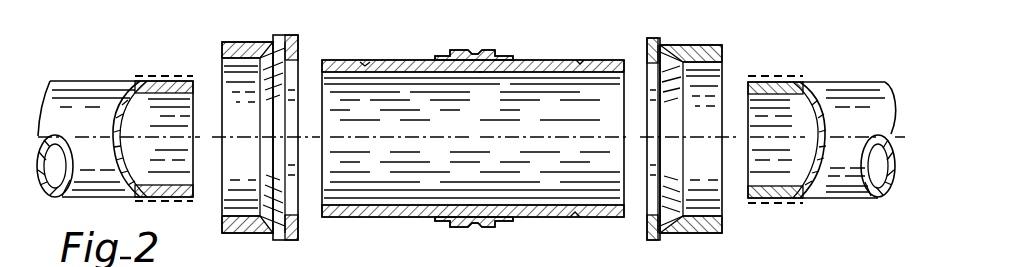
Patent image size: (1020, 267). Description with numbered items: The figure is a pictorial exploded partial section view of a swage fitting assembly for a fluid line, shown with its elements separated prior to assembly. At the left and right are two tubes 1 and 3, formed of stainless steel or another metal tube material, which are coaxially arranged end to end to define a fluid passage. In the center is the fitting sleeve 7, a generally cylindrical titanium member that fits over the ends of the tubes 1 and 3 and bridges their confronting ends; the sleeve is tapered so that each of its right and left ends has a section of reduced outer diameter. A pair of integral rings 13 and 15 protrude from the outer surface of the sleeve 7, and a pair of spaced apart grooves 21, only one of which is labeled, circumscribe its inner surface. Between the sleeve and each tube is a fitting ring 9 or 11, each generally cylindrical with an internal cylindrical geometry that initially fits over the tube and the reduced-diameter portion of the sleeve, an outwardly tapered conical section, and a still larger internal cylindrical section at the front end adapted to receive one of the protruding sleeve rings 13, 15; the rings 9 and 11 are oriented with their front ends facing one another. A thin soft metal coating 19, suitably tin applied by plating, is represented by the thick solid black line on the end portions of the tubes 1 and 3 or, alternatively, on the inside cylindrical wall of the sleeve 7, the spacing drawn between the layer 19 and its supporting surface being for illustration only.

The tube 1 is at (86, 80).
The tube 3 is at (840, 82).
The fitting sleeve 7 is at (550, 51).
The fitting ring 9 is at (262, 43).
The fitting ring 11 is at (685, 45).
The integral ring 13 is at (455, 50).
The integral ring 15 is at (487, 50).
The thin soft metal coating 19 is at (468, 205).
The groove 21 is at (365, 62).